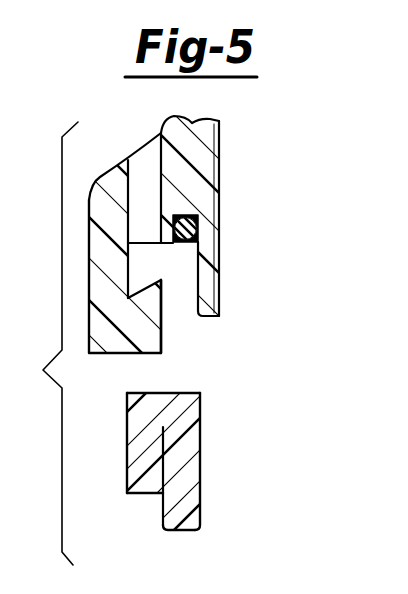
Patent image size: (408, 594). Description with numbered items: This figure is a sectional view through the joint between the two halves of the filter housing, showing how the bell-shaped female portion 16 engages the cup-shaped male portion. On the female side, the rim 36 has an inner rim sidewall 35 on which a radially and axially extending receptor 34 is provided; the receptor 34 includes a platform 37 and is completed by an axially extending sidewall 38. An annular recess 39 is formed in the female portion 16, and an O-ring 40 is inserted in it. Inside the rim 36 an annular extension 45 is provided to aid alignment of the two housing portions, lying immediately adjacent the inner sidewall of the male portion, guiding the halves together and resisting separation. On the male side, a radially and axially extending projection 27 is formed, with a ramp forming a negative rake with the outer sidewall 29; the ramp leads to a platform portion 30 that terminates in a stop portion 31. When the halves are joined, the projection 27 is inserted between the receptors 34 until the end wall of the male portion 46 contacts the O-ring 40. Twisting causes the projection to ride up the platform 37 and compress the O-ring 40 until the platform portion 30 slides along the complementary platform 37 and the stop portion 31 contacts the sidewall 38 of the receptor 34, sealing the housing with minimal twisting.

The female portion 16 is at (85, 190).
The receptor 34 is at (22, 148).
The inner rim sidewall 35 is at (128, 263).
The platform 37 is at (153, 284).
The rim 36 is at (89, 296).
The annular recess 39 is at (197, 217).
The O-ring 40 is at (197, 232).
The annular extension 45 is at (219, 295).
The axially extending sidewall 38 is at (162, 323).
The end wall of the male portion 46 is at (196, 393).
The projection 27 is at (117, 431).
The platform portion 30 is at (145, 435).
The stop portion 31 is at (142, 494).
The outer sidewall 29 is at (179, 531).